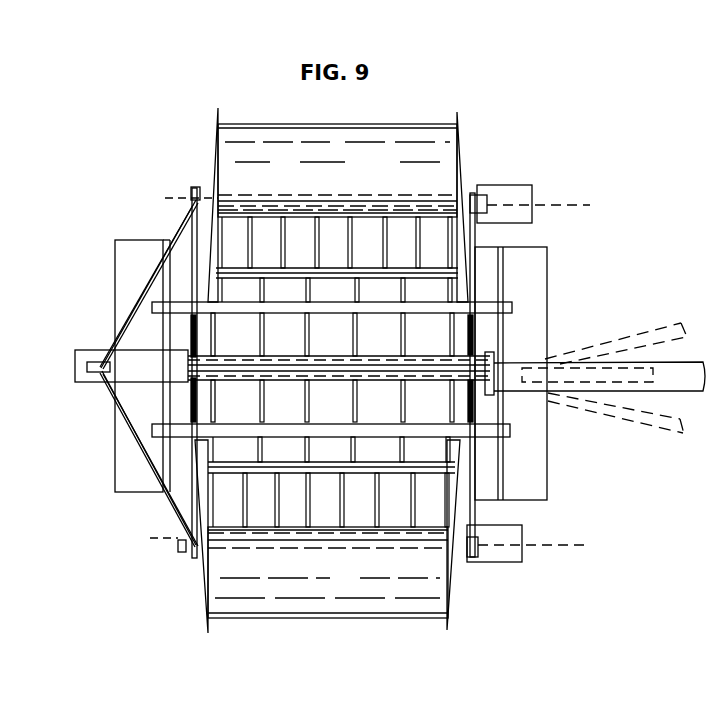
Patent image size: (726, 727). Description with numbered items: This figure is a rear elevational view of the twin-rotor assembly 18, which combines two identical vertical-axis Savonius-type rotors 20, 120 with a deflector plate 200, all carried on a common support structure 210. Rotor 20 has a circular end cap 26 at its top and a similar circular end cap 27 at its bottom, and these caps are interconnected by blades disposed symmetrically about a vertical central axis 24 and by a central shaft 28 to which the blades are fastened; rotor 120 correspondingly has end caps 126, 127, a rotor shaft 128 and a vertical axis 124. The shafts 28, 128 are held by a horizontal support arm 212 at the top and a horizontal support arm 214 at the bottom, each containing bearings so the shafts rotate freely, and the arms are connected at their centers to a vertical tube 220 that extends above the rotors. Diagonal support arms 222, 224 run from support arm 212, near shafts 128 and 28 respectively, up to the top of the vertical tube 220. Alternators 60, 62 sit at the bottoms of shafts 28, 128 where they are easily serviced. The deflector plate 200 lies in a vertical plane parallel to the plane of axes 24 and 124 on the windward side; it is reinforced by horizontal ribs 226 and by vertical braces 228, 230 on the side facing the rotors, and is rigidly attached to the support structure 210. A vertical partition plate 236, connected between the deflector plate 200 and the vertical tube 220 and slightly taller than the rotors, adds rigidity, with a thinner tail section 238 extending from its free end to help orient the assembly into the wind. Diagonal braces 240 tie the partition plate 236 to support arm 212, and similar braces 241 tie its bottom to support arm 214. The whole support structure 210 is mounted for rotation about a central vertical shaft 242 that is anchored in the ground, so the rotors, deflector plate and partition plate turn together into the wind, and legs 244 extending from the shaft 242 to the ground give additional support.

The rotor assembly 18 is at (166, 109).
The Savonius-type rotor 20 is at (290, 123).
The vertical central axis 24 is at (186, 197).
The circular end cap 26 is at (217, 107).
The circular end cap 27 is at (458, 115).
The central shaft 28 is at (195, 192).
The alternator 60 is at (517, 187).
The alternator 62 is at (503, 562).
The Savonius-type rotor 120 is at (293, 619).
The vertical axis 124 is at (178, 540).
The circular end cap 126 is at (207, 626).
The circular end cap 127 is at (447, 632).
The rotor shaft 128 is at (180, 552).
The deflector plate 200 is at (118, 247).
The support structure 210 is at (187, 504).
The support arm 212 is at (195, 226).
The support arm 214 is at (475, 240).
The vertical tube 220 is at (80, 364).
The diagonal support arm 222 is at (160, 500).
The diagonal support arm 224 is at (120, 351).
The rib 226 is at (162, 416).
The vertical brace 228 is at (151, 430).
The vertical brace 230 is at (152, 306).
The partition plate 236 is at (378, 358).
The tail section 238 is at (421, 363).
The diagonal brace 240 is at (198, 336).
The brace 241 is at (473, 322).
The central vertical shaft 242 is at (510, 359).
The leg 244 is at (605, 340).